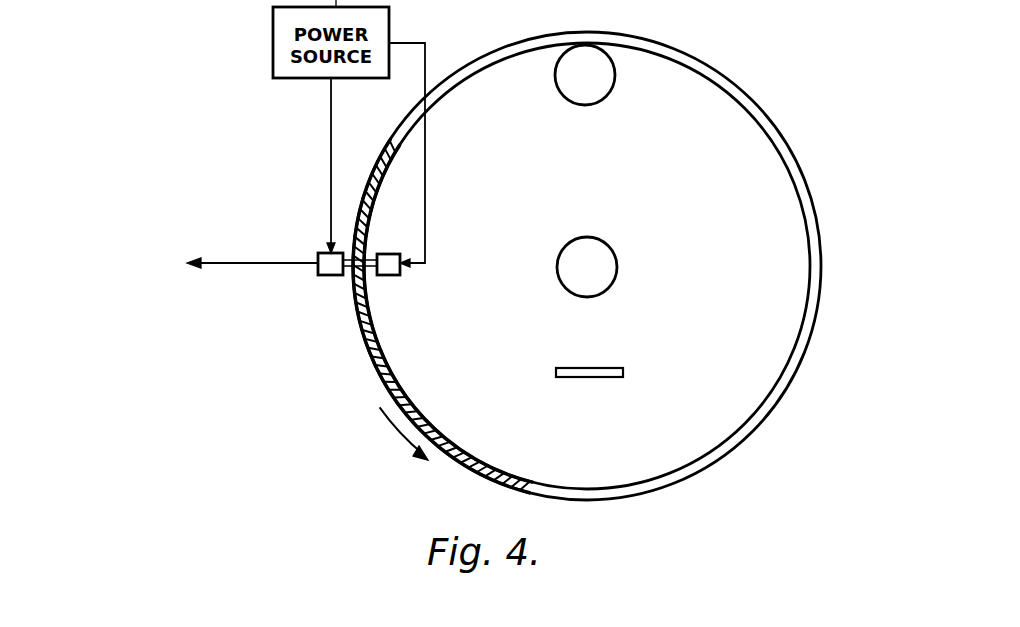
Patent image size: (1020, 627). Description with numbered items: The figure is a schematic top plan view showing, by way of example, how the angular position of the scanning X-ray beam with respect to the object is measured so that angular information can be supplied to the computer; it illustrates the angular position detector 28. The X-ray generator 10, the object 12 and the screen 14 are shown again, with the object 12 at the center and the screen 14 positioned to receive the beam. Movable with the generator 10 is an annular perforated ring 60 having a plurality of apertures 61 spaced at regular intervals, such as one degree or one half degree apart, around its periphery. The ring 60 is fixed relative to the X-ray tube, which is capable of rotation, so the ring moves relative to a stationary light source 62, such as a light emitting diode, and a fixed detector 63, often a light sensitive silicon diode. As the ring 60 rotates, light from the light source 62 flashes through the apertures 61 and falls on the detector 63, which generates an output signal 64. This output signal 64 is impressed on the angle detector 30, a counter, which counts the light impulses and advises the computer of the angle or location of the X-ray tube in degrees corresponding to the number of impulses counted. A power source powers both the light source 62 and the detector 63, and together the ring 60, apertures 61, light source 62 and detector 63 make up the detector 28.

The X-ray generator 10 is at (558, 85).
The object 12 is at (594, 244).
The screen 14 is at (581, 368).
The detector 28 is at (338, 277).
The angle detector 30 is at (110, 290).
The annular perforated ring 60 is at (362, 337).
The apertures 61 is at (375, 373).
The light source 62 is at (392, 254).
The detector 63 is at (325, 253).
The output signal 64 is at (235, 258).